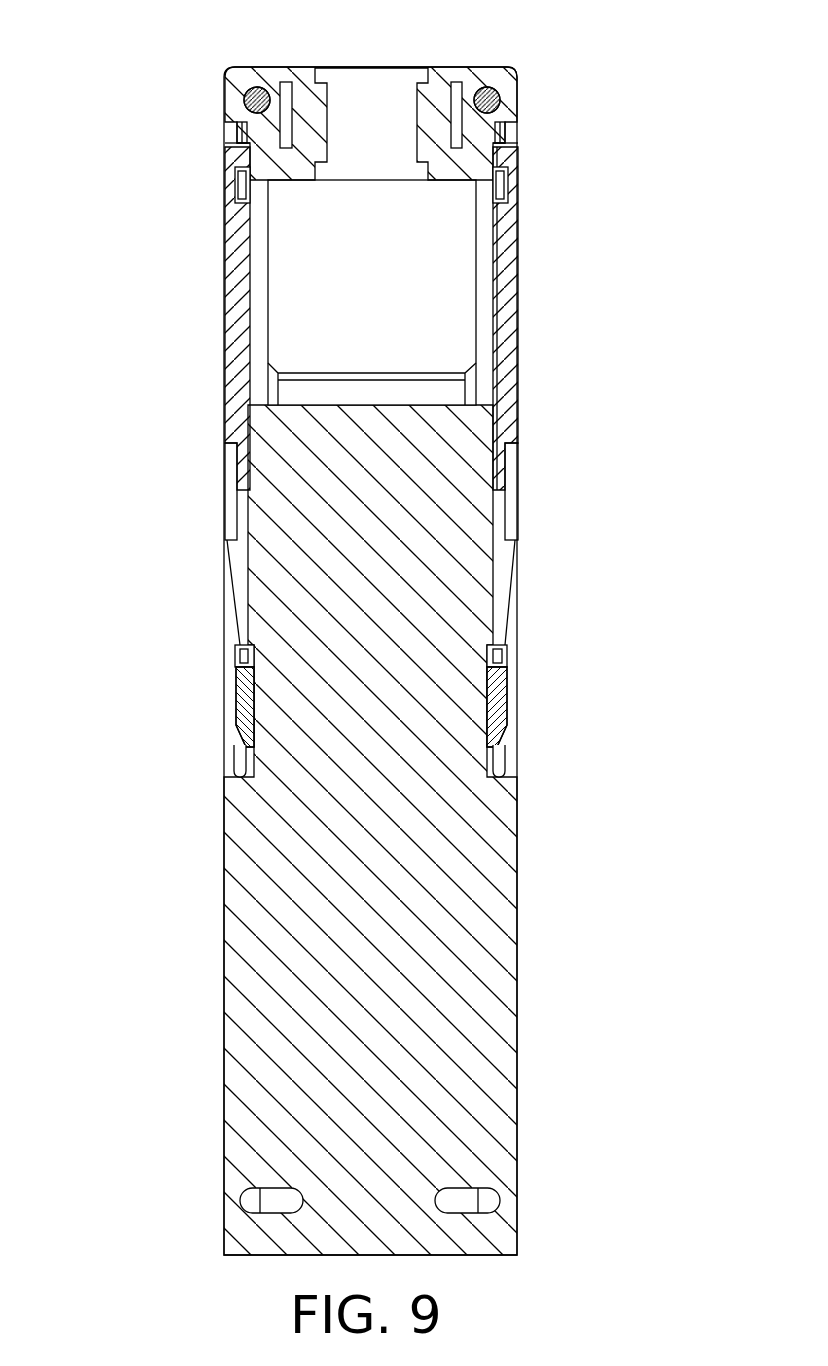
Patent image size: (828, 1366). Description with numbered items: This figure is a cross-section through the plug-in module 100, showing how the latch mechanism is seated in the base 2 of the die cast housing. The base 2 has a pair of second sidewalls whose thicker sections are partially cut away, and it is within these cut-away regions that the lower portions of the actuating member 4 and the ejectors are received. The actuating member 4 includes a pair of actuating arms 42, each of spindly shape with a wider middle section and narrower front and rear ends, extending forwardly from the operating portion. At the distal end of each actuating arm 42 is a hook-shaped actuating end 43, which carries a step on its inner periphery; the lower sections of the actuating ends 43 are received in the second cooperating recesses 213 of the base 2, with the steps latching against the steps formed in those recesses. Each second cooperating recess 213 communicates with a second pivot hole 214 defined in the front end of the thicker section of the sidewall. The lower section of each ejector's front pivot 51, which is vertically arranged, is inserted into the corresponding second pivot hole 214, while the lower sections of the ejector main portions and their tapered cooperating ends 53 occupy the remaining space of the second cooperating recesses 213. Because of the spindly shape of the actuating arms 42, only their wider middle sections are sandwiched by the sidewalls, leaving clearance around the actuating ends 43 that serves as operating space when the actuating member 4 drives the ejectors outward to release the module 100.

The plug-in module 100 is at (365, 23).
The base 2 is at (498, 115).
The actuating member 4 is at (507, 328).
The actuating arm 42 is at (508, 578).
The actuating end 43 is at (240, 657).
The cooperating end 53 is at (505, 677).
The second cooperating recess 213 is at (500, 717).
The second pivot hole 214 is at (240, 771).
The pivot 51 is at (500, 773).